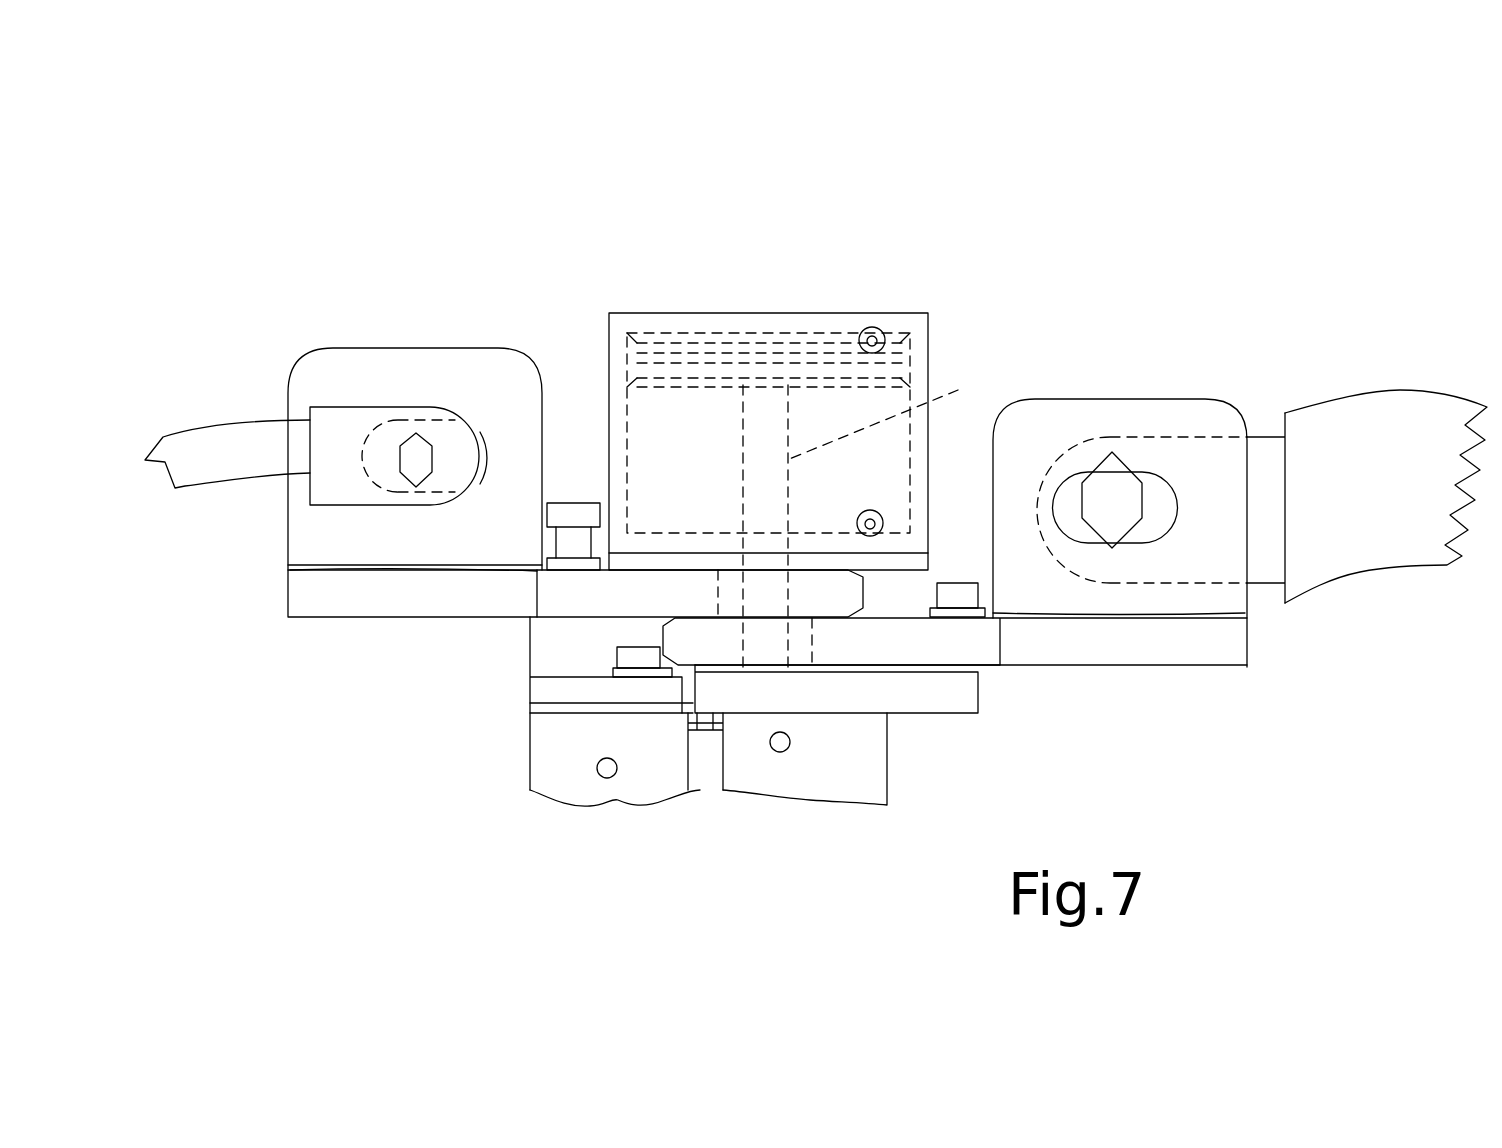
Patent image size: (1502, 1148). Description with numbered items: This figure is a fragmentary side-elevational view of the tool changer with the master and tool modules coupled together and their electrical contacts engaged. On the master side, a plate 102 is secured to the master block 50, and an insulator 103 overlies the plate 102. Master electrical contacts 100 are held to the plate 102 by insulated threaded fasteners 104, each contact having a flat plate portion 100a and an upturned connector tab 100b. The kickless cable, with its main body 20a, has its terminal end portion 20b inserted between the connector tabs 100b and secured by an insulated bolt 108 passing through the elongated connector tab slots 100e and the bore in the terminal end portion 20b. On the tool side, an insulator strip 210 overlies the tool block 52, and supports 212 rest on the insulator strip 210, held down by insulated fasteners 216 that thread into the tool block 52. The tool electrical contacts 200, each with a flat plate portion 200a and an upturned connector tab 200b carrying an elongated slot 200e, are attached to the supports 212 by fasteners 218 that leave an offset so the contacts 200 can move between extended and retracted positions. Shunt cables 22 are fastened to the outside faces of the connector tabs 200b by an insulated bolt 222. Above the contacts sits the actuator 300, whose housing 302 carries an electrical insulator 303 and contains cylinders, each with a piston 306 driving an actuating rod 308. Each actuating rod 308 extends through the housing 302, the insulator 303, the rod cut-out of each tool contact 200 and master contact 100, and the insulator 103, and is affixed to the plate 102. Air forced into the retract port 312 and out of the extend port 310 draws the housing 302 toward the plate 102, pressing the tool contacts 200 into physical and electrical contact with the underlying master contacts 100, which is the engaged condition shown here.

The main body 20a is at (1390, 393).
The terminal end portion 20b is at (1283, 437).
The shunt cables 22 is at (253, 421).
The master block 50 is at (890, 785).
The tool block 52 is at (528, 760).
The master electrical contacts 100 is at (1157, 708).
The flat plate portion 100a is at (830, 660).
The upturned connector tabs 100b is at (1120, 398).
The elongated connector tab slots 100e is at (1068, 472).
The plate 102 is at (940, 713).
The insulator 103 is at (980, 670).
The threaded fasteners 104 is at (963, 582).
The insulated bolt 108 is at (1130, 470).
The tool electrical contacts 200 is at (320, 672).
The flat plate portion 200a is at (710, 578).
The connector tab 200b is at (408, 348).
The elongated slot 200e is at (487, 432).
The insulator strip 210 is at (530, 708).
The supports 212 is at (530, 668).
The fasteners 216 is at (625, 648).
The fasteners 218 is at (548, 508).
The insulated bolt 222 is at (412, 456).
The actuator 300 is at (885, 248).
The housing 302 is at (680, 320).
The electrical insulator 303 is at (727, 553).
The piston 306 is at (720, 350).
The actuating rod 308 is at (902, 414).
The extend port 310 is at (880, 332).
The retract port 312 is at (866, 512).